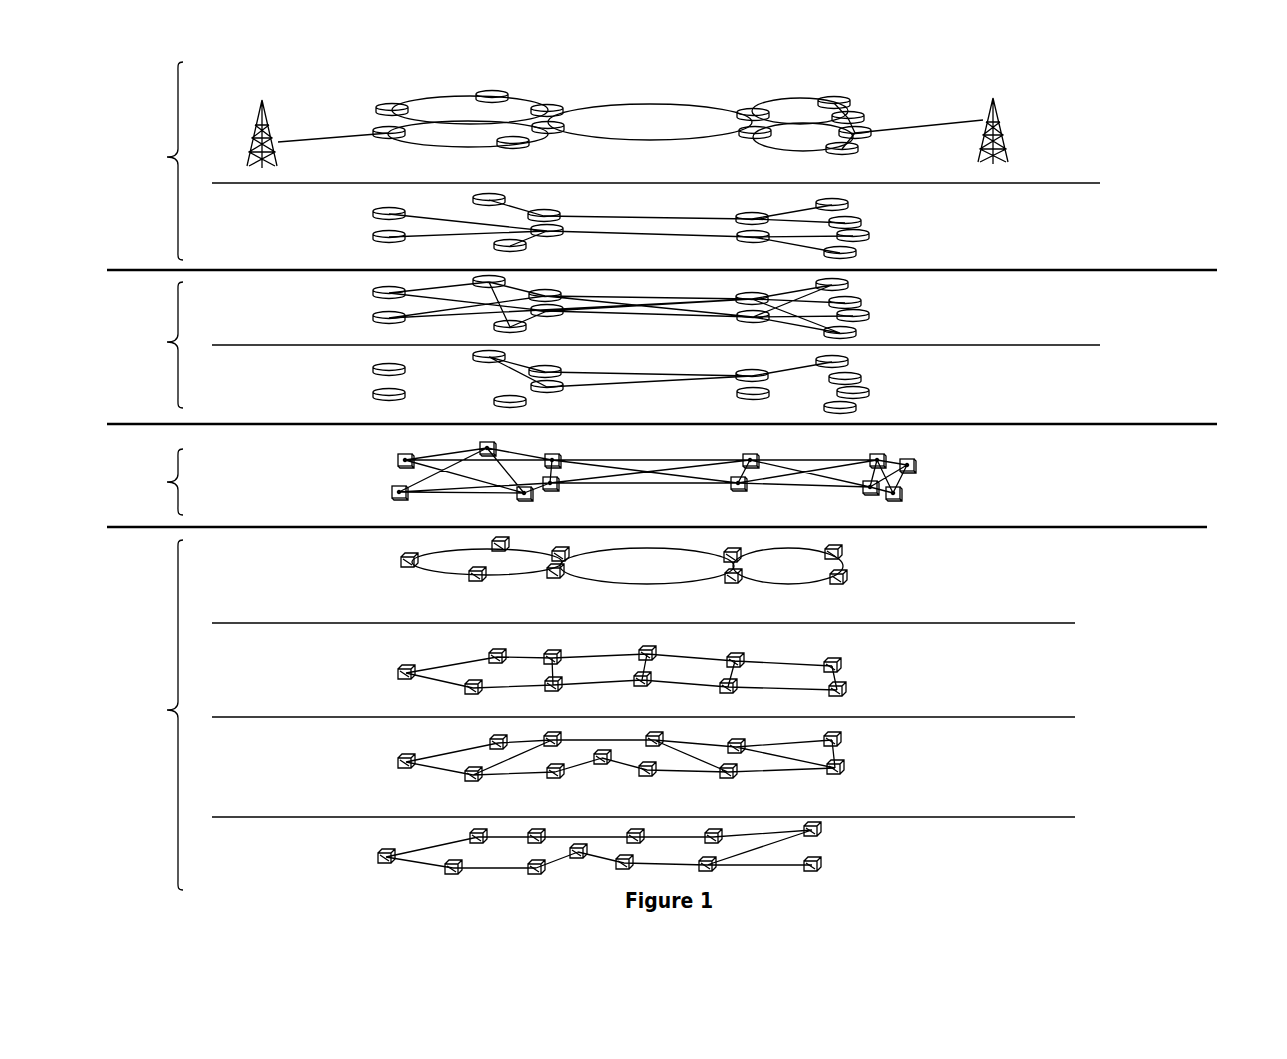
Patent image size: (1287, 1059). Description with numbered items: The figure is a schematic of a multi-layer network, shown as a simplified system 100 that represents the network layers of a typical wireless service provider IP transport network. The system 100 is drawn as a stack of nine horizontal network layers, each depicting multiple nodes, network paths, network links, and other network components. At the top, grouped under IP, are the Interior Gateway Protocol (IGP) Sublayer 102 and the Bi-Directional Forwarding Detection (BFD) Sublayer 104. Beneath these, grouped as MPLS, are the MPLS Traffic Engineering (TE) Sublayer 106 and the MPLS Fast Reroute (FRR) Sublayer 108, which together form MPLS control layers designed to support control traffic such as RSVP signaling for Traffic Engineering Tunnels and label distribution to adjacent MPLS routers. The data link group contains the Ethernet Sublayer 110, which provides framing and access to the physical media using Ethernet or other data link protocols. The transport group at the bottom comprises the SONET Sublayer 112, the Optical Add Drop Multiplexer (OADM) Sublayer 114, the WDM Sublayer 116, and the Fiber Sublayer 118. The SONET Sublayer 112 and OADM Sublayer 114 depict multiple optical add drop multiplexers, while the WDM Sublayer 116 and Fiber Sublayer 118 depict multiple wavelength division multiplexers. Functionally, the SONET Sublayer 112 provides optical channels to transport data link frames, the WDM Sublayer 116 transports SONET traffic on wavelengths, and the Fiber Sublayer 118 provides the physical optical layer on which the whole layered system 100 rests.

The system 100 is at (683, 82).
The Interior Gateway Protocol (IGP) Sublayer 102 is at (738, 132).
The Bi-Directional Forwarding Detection (BFD) Sublayer 104 is at (800, 226).
The MPLS Traffic Engineering (TE) Sublayer 106 is at (800, 307).
The MPLS Fast Reroute (FRR) Sublayer 108 is at (800, 382).
The Ethernet Sublayer 110 is at (810, 471).
The SONET Sublayer 112 is at (814, 569).
The Optical Add Drop Multiplexer (OADM) Sublayer 114 is at (813, 671).
The WDM Sublayer 116 is at (813, 756).
The Fiber Sublayer 118 is at (803, 848).